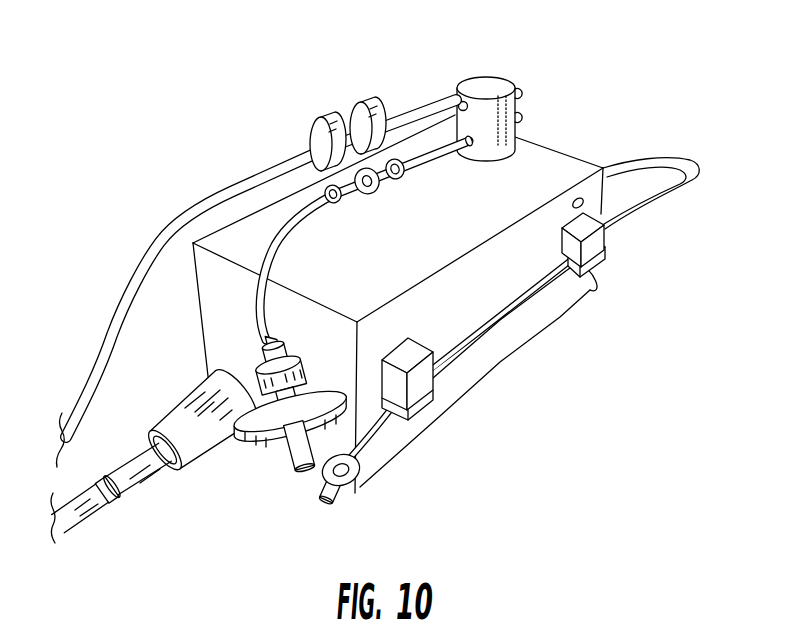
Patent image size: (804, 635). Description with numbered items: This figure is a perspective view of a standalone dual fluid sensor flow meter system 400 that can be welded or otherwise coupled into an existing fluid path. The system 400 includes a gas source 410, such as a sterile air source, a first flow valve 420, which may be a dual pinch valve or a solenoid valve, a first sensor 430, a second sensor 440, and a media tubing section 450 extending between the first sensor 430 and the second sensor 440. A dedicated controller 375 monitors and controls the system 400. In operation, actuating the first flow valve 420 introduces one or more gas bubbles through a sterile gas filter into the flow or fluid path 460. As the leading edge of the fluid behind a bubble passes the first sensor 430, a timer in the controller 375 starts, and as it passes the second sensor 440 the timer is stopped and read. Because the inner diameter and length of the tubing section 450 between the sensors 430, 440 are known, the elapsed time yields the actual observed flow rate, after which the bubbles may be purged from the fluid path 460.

The standalone flow meter system 400 is at (410, 279).
The dedicated controller 375 is at (573, 152).
The first flow valve 420 is at (462, 83).
The flow or fluid path 460 is at (693, 162).
The first sensor 430 is at (594, 276).
The media tubing section 450 is at (493, 330).
The second sensor 440 is at (420, 412).
The gas source 410 is at (272, 446).